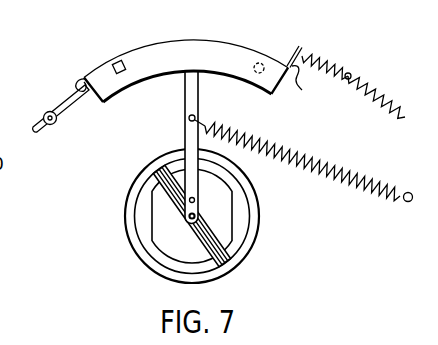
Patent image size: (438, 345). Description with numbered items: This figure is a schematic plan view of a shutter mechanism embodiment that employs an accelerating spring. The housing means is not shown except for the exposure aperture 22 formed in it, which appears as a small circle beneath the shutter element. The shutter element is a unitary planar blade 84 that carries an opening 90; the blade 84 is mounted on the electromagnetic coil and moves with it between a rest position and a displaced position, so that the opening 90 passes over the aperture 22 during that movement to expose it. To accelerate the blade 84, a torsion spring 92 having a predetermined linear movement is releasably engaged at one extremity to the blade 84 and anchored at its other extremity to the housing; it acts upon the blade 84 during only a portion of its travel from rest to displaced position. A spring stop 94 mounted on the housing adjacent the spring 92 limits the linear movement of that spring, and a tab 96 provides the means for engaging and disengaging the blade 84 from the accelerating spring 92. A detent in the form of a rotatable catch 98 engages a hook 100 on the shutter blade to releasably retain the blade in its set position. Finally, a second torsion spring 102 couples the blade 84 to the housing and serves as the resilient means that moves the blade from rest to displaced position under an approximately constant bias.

The blade 84 is at (181, 47).
The opening 90 is at (132, 48).
The exposure aperture 22 is at (256, 62).
The torsion spring 92 is at (328, 67).
The spring stop 94 is at (352, 75).
The tab 96 is at (302, 90).
The rotatable catch 98 is at (67, 103).
The hook 100 is at (78, 79).
The torsion spring 102 is at (317, 166).